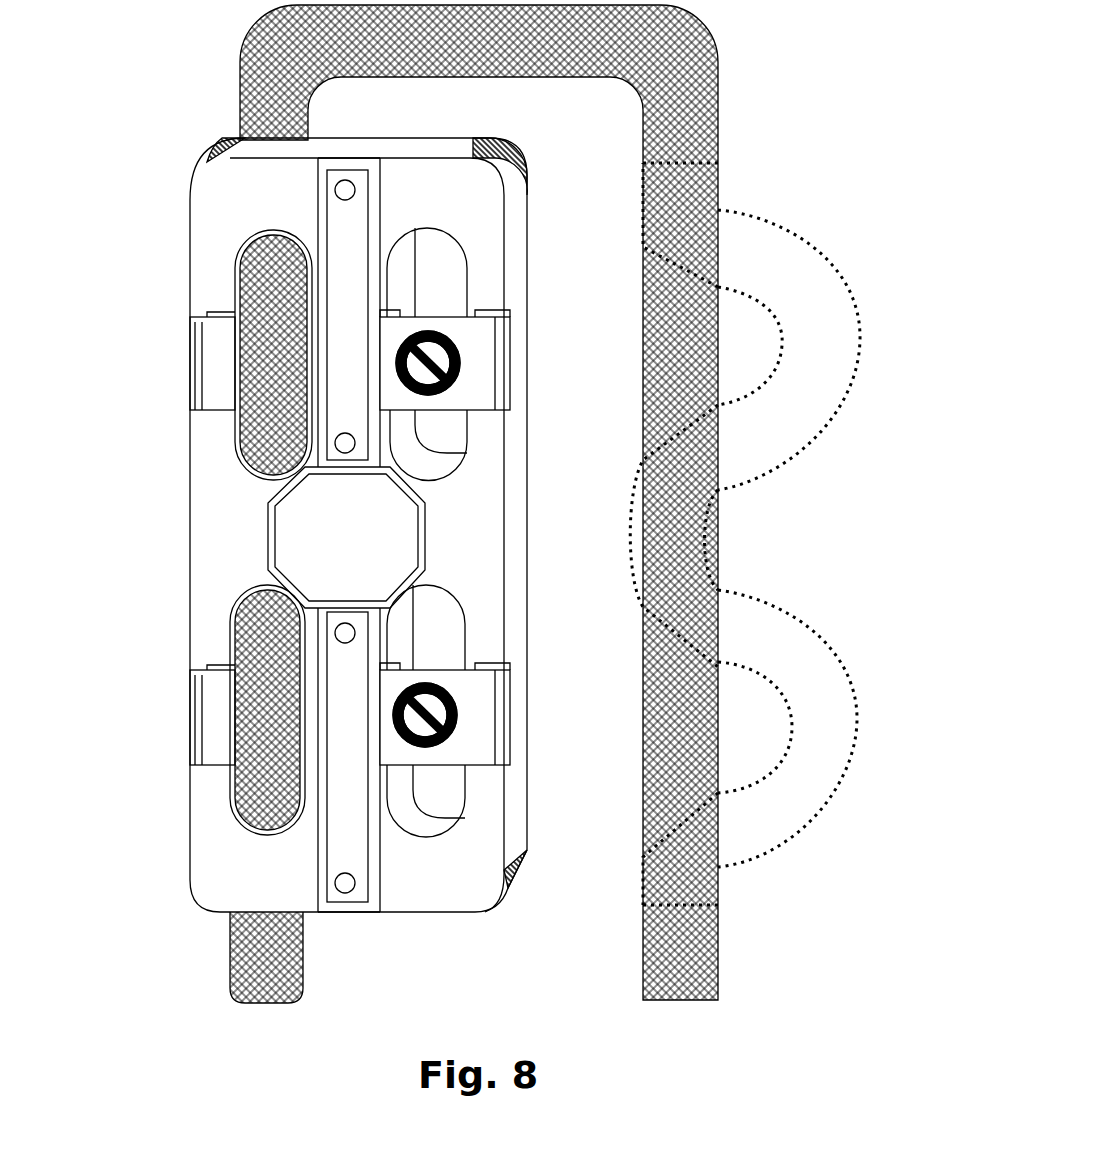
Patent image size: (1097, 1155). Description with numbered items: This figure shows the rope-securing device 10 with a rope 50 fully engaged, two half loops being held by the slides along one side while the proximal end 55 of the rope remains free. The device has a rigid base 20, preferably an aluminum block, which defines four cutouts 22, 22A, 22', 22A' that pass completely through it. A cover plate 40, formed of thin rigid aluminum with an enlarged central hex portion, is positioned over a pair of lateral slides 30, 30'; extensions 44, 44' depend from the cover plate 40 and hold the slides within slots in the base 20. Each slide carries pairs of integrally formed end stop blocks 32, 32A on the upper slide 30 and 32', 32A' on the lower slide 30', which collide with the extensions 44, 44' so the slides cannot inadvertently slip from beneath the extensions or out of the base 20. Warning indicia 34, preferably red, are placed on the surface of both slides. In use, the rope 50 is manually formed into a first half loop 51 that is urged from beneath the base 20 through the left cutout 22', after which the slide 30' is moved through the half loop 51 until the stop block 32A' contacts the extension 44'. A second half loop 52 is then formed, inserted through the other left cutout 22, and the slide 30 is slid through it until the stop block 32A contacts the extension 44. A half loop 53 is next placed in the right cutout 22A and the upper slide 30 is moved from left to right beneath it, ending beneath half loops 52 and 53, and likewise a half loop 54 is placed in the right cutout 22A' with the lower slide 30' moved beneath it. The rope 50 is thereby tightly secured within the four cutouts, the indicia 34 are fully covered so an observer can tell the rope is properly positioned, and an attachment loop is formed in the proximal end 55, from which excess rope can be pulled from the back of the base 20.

The rope-securing device 10 is at (324, 564).
The rigid base 20 is at (258, 193).
The first left side cutout 22 is at (225, 355).
The second left side cutout 22' is at (220, 710).
The right third cutout 22A is at (495, 354).
The right fourth cutout 22A' is at (497, 711).
The first or upper slide 30 is at (157, 361).
The second or lower slide 30' is at (153, 715).
The end stop block 32 is at (160, 366).
The end stop block 32' is at (149, 720).
The end stop block 32A is at (492, 360).
The end stop block 32A' is at (494, 714).
The warning indicia 34 is at (578, 713).
The cover plate 40 is at (322, 537).
The extension 44 is at (380, 319).
The extension 44' is at (310, 753).
The rope 50 is at (250, 957).
The first half loop 51 is at (250, 645).
The half loop 52 is at (263, 270).
The half loop 53 is at (798, 268).
The half loop 54 is at (803, 778).
The proximal end 55 is at (672, 20).